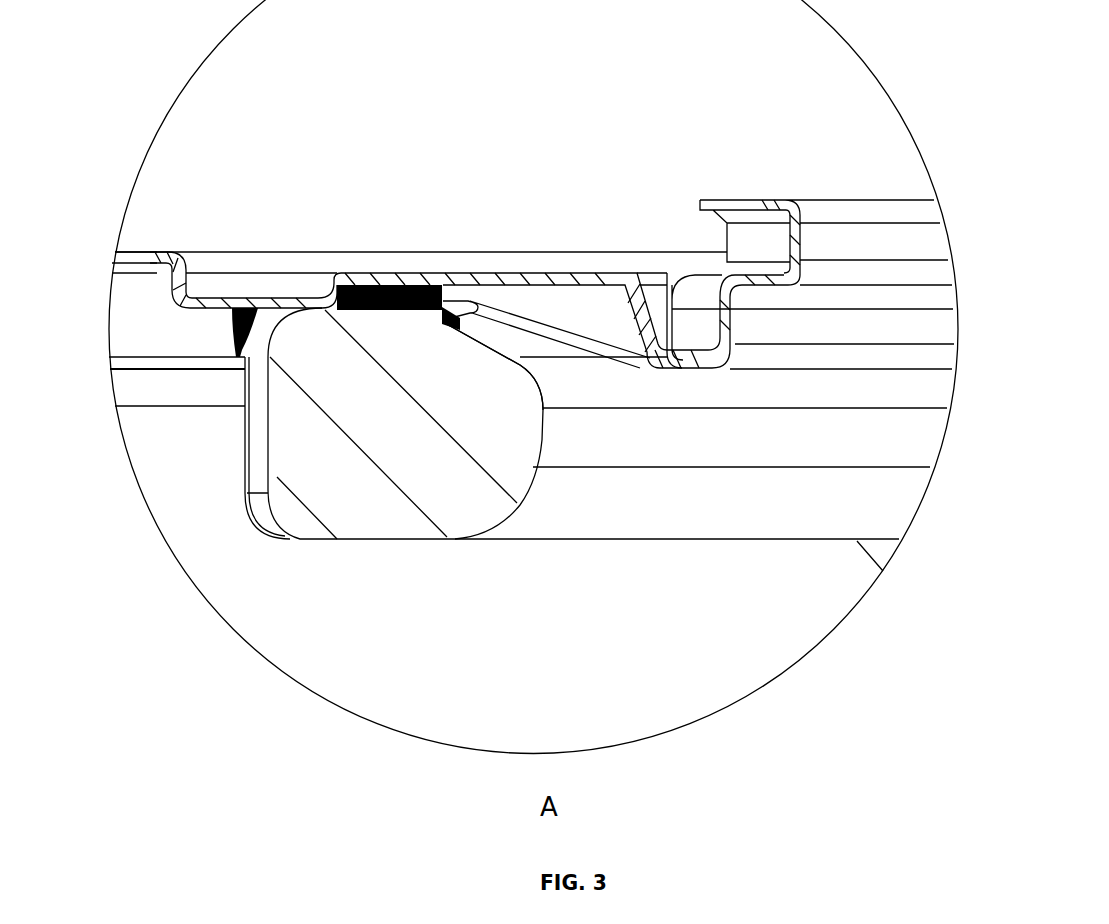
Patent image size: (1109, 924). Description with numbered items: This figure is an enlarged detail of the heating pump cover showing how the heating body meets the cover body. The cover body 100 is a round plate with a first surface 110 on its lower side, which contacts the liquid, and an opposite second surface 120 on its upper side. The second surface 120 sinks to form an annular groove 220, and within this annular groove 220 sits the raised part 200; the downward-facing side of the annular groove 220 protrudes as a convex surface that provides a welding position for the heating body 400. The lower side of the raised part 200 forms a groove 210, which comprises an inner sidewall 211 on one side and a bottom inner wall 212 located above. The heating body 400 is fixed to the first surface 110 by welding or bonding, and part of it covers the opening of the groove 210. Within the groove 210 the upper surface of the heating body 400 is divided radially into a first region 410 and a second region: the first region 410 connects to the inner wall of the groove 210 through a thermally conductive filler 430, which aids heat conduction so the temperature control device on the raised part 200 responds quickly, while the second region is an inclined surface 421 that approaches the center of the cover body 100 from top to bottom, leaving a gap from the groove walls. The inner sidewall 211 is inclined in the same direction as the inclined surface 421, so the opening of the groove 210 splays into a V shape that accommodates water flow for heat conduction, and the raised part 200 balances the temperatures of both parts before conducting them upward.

The cover body 100 is at (757, 186).
The first surface 110 is at (146, 284).
The second surface 120 is at (152, 238).
The raised part 200 is at (601, 273).
The groove 210 is at (596, 478).
The inner sidewall 211 is at (581, 354).
The bottom inner wall 212 is at (594, 296).
The annular groove 220 is at (247, 286).
The heating body 400 is at (343, 483).
The first region 410 is at (347, 321).
The inclined surface 421 is at (484, 357).
The thermally conductive filler 430 is at (477, 330).